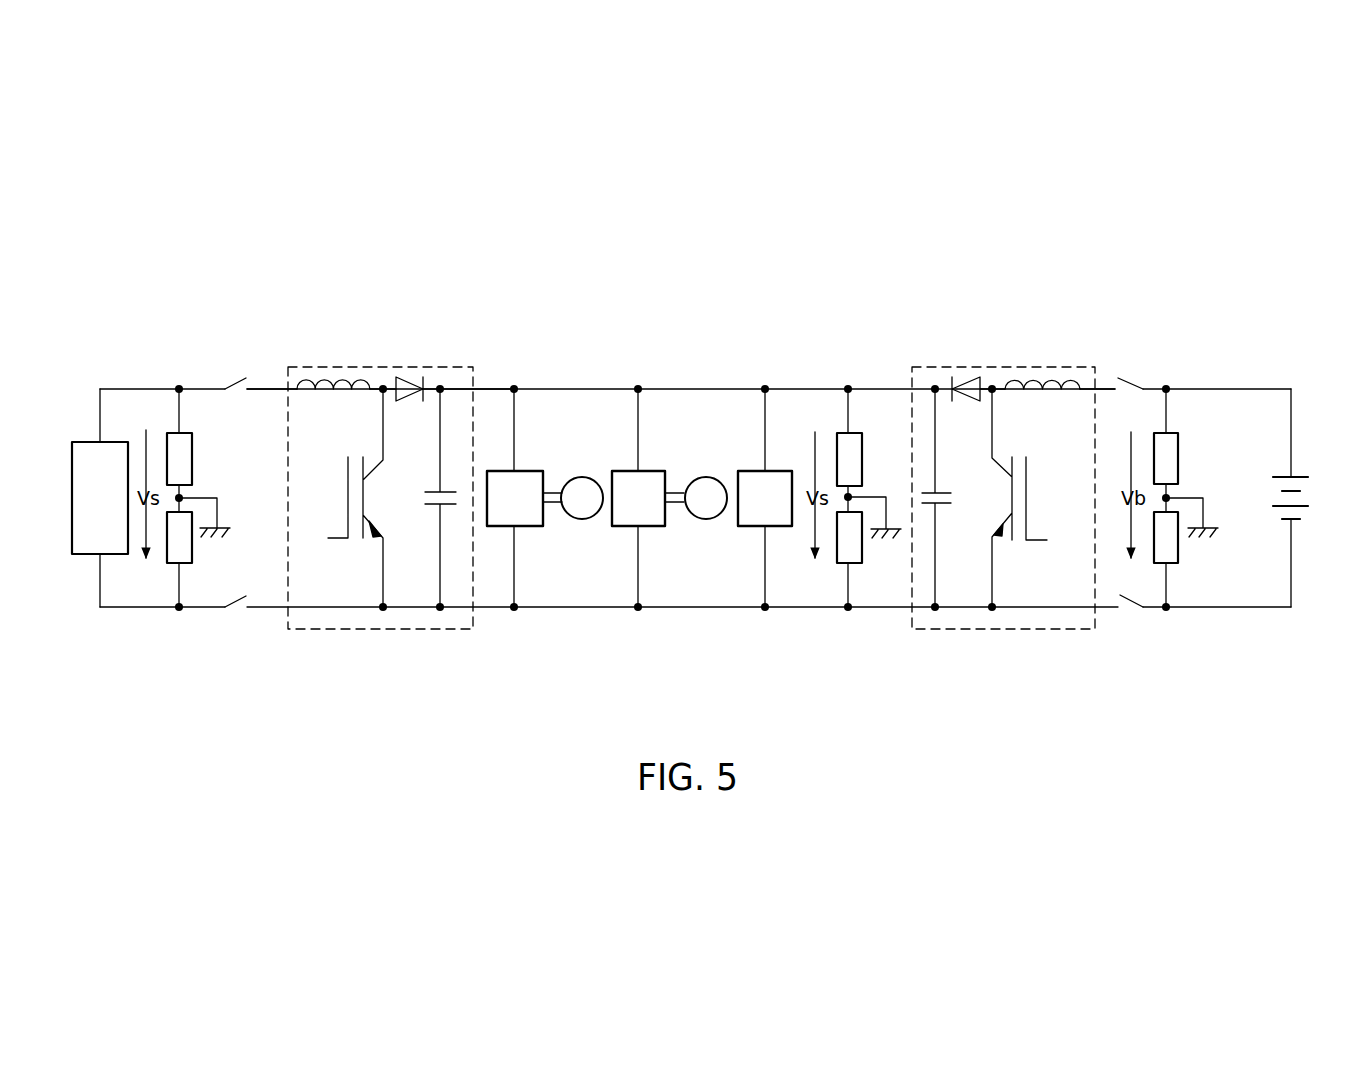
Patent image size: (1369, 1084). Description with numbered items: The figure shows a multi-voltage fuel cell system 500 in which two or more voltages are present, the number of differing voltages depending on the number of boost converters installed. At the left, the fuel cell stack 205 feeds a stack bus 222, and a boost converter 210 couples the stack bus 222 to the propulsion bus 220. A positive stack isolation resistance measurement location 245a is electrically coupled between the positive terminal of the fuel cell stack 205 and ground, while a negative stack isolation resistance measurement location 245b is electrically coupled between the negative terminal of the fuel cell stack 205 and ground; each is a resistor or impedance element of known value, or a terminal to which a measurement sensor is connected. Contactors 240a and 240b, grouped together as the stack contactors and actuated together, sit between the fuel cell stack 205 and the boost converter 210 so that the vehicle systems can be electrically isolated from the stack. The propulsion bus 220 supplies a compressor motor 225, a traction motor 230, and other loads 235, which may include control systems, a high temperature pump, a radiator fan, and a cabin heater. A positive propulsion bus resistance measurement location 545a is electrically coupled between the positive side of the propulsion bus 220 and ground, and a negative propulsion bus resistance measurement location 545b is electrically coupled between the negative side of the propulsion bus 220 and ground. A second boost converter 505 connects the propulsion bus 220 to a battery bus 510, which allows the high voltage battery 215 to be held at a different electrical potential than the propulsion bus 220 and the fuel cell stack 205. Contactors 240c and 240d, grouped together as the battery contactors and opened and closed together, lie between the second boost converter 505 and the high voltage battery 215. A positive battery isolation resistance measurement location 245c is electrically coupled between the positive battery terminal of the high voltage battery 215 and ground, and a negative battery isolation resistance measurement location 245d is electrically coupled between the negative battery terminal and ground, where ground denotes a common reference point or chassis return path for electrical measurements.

The fuel cell stack 205 is at (82, 441).
The boost converter 210 is at (383, 366).
The high voltage battery 215 is at (1310, 462).
The propulsion bus 220 is at (591, 388).
The stack bus 222 is at (138, 388).
The compressor motor 225 is at (566, 466).
The traction motor 230 is at (690, 466).
The other loads 235 is at (752, 527).
The contactor 240a is at (254, 374).
The contactor 240b is at (231, 613).
The contactor 240c is at (1111, 374).
The contactor 240d is at (1134, 615).
The positive stack isolation resistance measurement location 245a is at (192, 470).
The negative stack isolation resistance measurement location 245b is at (192, 555).
The positive battery isolation resistance measurement location 245c is at (1178, 470).
The negative battery isolation resistance measurement location 245d is at (1178, 555).
The multi-voltage fuel cell system 500 is at (1013, 421).
The second boost converter 505 is at (999, 366).
The battery bus 510 is at (1270, 388).
The positive propulsion bus resistance measurement location 545a is at (840, 430).
The negative propulsion bus resistance measurement location 545b is at (840, 566).